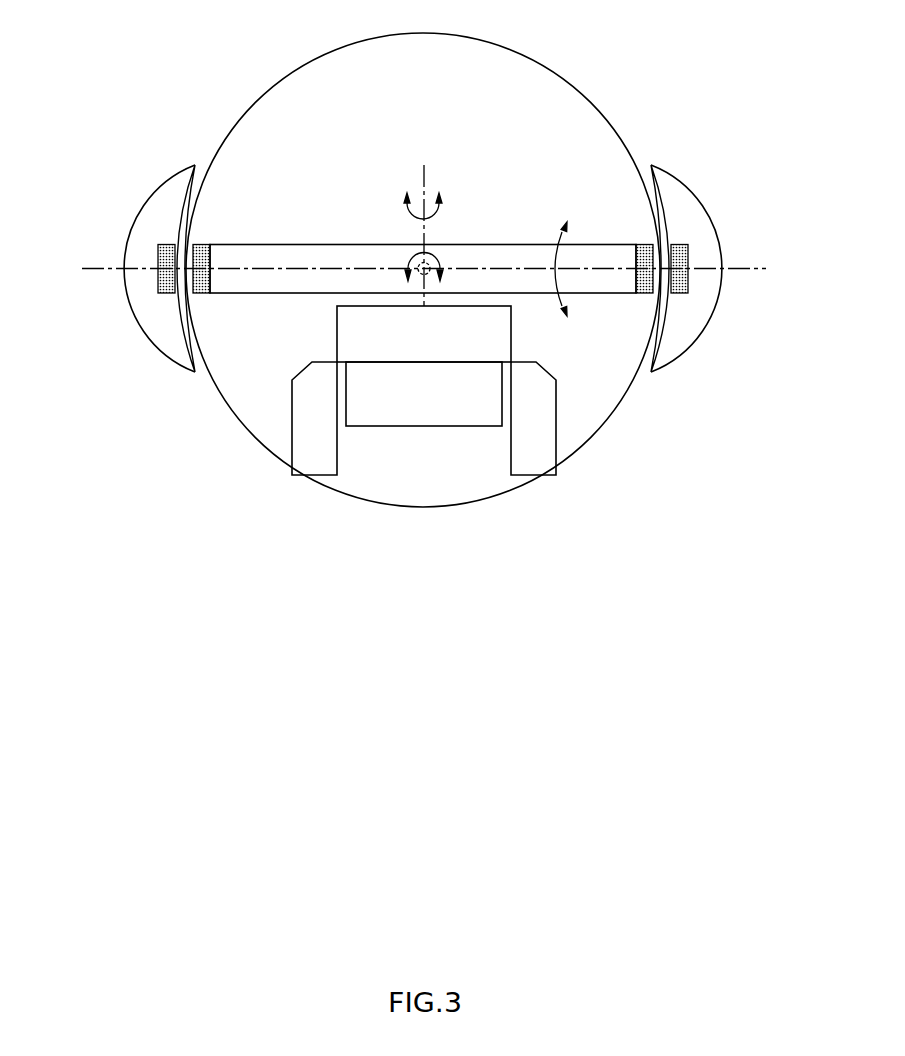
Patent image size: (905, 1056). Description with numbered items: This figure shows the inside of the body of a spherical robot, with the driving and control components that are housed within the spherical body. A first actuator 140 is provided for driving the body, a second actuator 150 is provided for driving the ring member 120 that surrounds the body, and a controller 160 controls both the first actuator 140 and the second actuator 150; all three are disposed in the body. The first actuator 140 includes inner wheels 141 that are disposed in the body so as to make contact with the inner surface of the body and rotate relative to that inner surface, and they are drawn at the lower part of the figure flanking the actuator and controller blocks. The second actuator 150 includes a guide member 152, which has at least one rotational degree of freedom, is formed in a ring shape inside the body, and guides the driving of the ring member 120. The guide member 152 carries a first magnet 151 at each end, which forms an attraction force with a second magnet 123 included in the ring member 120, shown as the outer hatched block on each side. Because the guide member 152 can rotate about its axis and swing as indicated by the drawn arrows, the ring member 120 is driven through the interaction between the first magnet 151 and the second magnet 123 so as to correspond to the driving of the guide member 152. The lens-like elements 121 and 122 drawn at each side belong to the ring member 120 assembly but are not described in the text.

The ring member 120 is at (422, 244).
The first lens 121 is at (157, 188).
The second lens 122 is at (182, 190).
The second magnet 123 is at (157, 282).
The first actuator 140 is at (408, 422).
The inner wheels 141 is at (313, 452).
The second actuator 150 is at (431, 238).
The first magnet 151 is at (200, 283).
The guide member 152 is at (590, 244).
The controller 160 is at (408, 358).